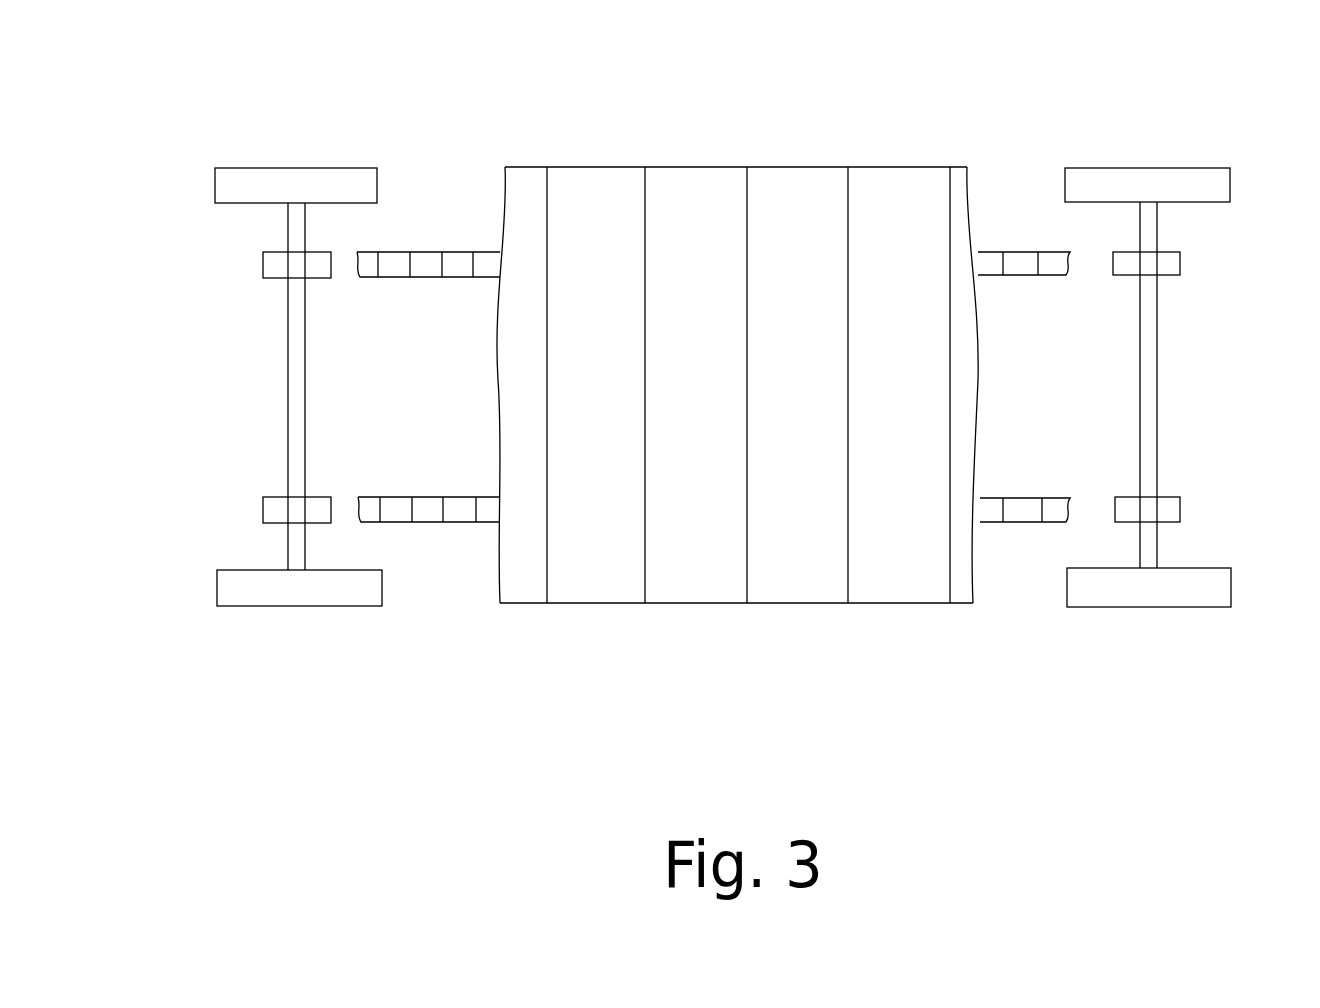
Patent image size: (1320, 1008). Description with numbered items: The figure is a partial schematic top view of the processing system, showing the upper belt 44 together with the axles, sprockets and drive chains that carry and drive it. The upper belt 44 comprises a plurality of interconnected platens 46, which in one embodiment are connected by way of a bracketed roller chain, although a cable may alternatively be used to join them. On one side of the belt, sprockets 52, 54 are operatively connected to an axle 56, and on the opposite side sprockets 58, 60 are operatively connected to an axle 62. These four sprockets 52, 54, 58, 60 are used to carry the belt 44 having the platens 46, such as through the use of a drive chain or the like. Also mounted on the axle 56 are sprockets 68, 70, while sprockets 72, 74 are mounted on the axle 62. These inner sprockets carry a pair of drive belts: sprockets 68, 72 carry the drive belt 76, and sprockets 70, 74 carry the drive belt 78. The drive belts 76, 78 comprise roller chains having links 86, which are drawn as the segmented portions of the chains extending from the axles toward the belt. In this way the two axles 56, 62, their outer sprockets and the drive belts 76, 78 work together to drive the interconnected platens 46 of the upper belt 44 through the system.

The upper belt 44 is at (924, 162).
The platens 46 is at (798, 245).
The sprocket 52 is at (262, 180).
The sprocket 54 is at (288, 592).
The axle 56 is at (293, 392).
The sprocket 58 is at (1207, 178).
The sprocket 60 is at (1195, 592).
The axle 62 is at (1145, 392).
The sprocket 68 is at (270, 262).
The sprocket 70 is at (277, 510).
The sprocket 72 is at (1175, 262).
The sprocket 74 is at (1175, 512).
The drive belt 76 is at (423, 283).
The drive belt 78 is at (423, 494).
The links 86 is at (462, 262).